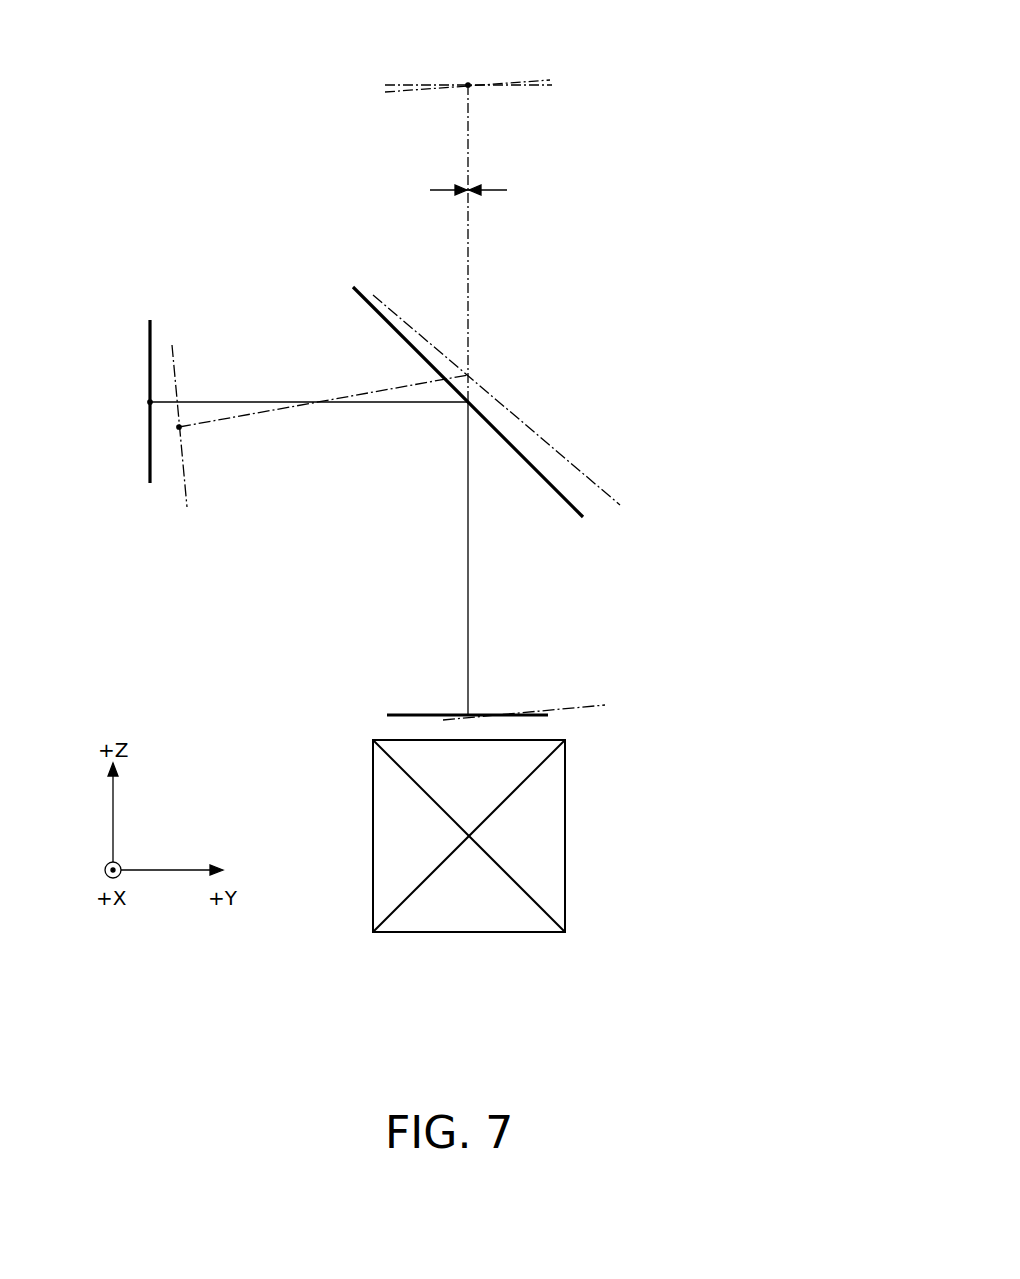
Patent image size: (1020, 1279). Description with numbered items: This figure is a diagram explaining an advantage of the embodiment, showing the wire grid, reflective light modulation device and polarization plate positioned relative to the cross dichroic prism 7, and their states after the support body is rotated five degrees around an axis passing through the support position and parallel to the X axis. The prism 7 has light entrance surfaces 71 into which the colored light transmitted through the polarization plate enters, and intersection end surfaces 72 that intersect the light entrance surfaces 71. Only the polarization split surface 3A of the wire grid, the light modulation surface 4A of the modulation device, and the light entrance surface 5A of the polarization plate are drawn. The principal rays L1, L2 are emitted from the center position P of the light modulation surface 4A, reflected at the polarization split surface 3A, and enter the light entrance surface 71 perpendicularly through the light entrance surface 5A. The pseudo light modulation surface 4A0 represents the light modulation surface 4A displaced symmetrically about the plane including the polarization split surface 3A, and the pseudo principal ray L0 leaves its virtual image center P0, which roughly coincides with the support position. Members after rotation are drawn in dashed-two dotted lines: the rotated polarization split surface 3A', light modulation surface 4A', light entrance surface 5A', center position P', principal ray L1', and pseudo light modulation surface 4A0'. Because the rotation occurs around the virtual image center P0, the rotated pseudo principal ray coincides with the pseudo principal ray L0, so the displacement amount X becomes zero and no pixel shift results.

The pseudo light modulation surface 4A0 is at (508, 121).
The pseudo light modulation surface after rotation 4A0' is at (501, 51).
The virtual image center P0 is at (468, 84).
The displacement amount X is at (468, 179).
The pseudo principal ray L0 is at (470, 268).
The polarization split surface 3A is at (483, 439).
The polarization split surface after rotation 3A' is at (568, 400).
The principal ray L1 is at (309, 365).
The principal ray after rotation L1' is at (323, 425).
The light modulation surface 4A is at (91, 417).
The light modulation surface after rotation 4A' is at (241, 449).
The center position P is at (179, 370).
The center position after rotation P' is at (211, 396).
The principal ray L2 is at (467, 537).
The light entrance surface 5A is at (446, 666).
The light entrance surface after rotation 5A' is at (545, 668).
The cross dichroic prism 7 is at (513, 926).
The light entrance surface 71 is at (540, 738).
The intersection end surface 72 is at (545, 878).